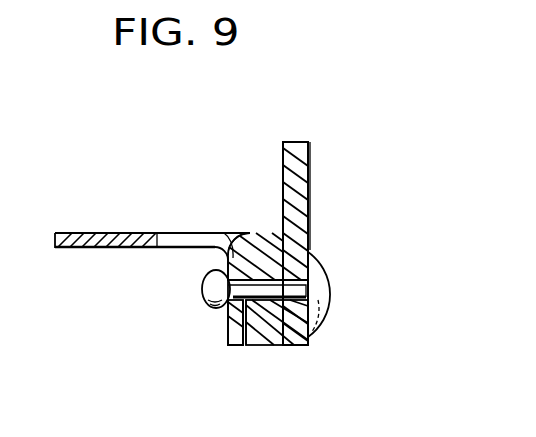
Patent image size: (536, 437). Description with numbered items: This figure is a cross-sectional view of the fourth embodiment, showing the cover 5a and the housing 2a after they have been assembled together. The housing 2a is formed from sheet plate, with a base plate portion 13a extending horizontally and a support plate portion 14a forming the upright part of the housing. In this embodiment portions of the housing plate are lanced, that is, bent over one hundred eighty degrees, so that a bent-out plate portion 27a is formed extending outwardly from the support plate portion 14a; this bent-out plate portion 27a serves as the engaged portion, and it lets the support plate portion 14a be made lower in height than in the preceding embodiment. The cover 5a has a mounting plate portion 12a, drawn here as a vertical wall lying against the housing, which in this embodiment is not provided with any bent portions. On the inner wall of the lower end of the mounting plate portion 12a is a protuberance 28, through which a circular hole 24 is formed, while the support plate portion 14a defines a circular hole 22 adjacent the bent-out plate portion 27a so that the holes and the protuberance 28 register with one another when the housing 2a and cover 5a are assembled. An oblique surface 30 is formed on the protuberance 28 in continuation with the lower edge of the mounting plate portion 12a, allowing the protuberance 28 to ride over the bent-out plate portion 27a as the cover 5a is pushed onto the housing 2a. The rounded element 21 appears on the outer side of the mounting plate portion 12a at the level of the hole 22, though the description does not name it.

The housing 2a is at (85, 233).
The base plate portion 13a is at (123, 232).
The bent-out plate portion 27a is at (272, 237).
The circular hole 24 is at (256, 237).
The cover 5a is at (311, 177).
The mounting plate portion 12a is at (312, 224).
The circular hole 22 is at (226, 288).
The head 21 is at (326, 290).
The support plate portion 14a is at (228, 322).
The oblique surface 30 is at (254, 335).
The protuberance 28 is at (280, 346).